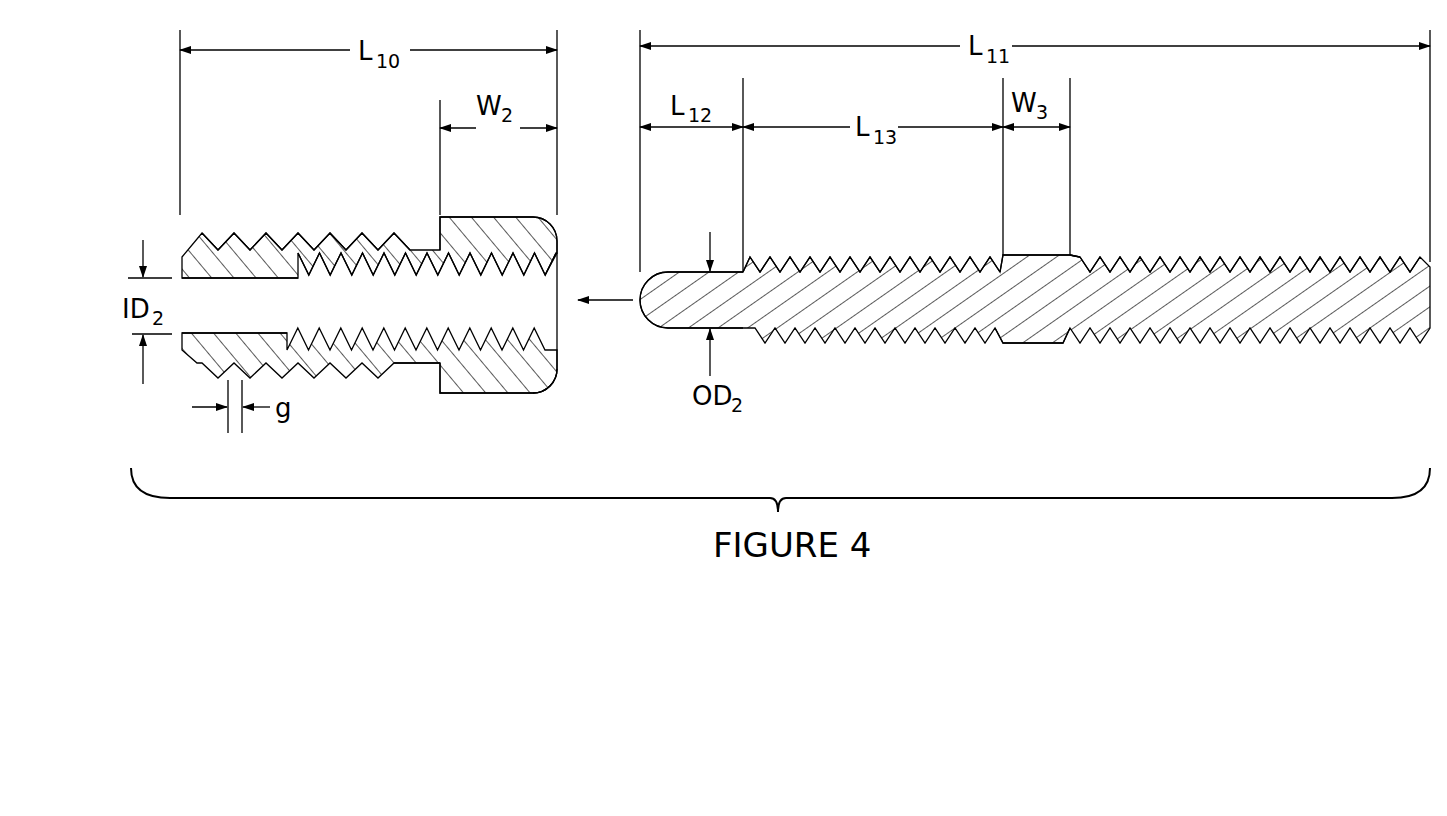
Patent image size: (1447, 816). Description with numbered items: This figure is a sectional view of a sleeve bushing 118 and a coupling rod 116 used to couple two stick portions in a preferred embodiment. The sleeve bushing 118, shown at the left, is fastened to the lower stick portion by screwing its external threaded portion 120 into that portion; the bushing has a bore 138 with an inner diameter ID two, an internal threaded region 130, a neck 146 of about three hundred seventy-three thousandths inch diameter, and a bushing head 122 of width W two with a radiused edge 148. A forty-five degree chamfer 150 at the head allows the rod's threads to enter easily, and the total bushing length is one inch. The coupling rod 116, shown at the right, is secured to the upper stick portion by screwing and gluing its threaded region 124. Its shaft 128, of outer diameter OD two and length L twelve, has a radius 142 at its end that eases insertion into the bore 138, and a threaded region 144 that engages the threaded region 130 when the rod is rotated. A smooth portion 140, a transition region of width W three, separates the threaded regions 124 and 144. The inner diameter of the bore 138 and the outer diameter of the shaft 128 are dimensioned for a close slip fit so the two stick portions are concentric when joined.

The coupling rod 116 is at (1387, 352).
The sleeve bushing 118 is at (181, 256).
The threaded portion 120 is at (303, 235).
The bushing head 122 is at (488, 215).
The threaded region 124 is at (1258, 262).
The shaft 128 is at (692, 270).
The threaded region 130 is at (455, 274).
The bore 138 is at (218, 333).
The smooth portion 140 is at (1036, 253).
The radius 142 is at (638, 323).
The threaded region 144 is at (905, 345).
The neck 146 is at (427, 366).
The radiused edge 148 is at (548, 389).
The chamfer 150 is at (556, 271).